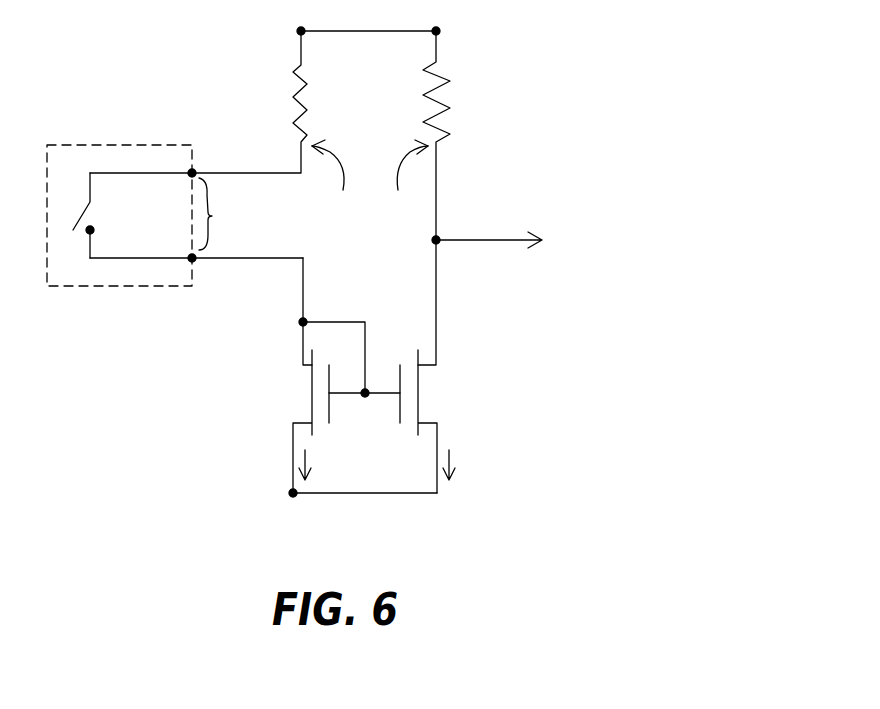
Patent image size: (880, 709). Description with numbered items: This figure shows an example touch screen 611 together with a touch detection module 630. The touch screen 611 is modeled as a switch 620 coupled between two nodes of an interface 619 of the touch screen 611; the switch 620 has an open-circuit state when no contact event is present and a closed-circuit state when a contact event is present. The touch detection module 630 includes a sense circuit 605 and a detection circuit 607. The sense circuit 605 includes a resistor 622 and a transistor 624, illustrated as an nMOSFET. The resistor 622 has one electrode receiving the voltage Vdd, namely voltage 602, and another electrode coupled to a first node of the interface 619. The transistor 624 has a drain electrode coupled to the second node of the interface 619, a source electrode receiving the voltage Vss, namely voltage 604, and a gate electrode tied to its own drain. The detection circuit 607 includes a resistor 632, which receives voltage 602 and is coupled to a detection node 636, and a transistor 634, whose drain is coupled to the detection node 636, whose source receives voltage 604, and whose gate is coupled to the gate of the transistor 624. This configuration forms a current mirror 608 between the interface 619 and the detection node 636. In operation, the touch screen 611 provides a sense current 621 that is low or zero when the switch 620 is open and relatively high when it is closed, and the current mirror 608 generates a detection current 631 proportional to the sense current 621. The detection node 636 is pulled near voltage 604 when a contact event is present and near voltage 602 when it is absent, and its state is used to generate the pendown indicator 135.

The voltage Vdd 602 is at (258, 46).
The voltage Vss 604 is at (467, 523).
The sense circuit 605 is at (334, 174).
The detection circuit 607 is at (407, 174).
The current mirror 608 is at (381, 298).
The touch screen 611 is at (178, 160).
The interface 619 is at (196, 220).
The switch 620 is at (93, 216).
The sense current 621 is at (313, 462).
The resistor 622 is at (312, 98).
The transistor 624 is at (297, 392).
The touch detection module 630 is at (210, 108).
The detection current 631 is at (458, 460).
The resistor 632 is at (447, 98).
The transistor 634 is at (430, 387).
The detection node 636 is at (443, 233).
The pendown indicator 135 is at (540, 233).